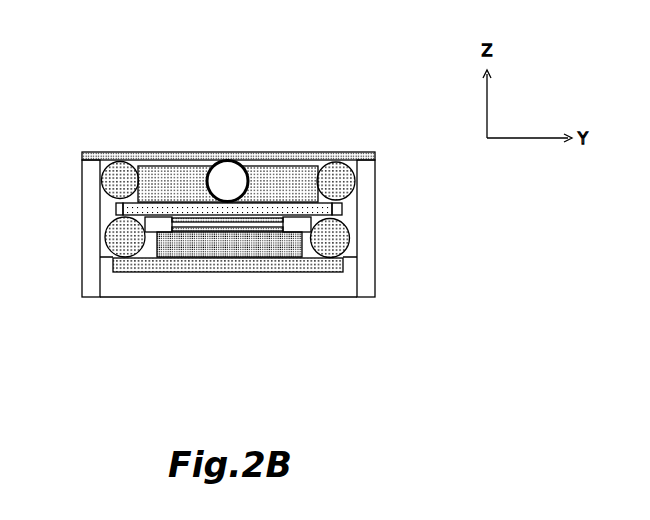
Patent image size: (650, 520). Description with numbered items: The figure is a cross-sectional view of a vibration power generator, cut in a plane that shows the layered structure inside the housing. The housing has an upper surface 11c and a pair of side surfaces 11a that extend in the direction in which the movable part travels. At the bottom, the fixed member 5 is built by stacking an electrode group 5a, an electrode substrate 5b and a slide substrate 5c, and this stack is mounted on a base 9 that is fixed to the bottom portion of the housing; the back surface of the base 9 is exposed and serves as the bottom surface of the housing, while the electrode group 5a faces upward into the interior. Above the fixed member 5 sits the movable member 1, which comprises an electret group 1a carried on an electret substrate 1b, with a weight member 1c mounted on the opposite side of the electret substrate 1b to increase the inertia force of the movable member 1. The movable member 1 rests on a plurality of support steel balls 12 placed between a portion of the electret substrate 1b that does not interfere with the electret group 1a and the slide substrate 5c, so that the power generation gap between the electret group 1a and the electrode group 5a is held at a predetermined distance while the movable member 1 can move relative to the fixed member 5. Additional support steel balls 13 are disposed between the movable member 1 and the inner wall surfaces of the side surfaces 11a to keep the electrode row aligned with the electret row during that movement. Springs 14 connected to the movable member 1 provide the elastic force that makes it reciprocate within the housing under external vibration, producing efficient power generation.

The movable member 1 is at (229, 145).
The electret group 1a is at (190, 218).
The electret substrate 1b is at (170, 212).
The weight member 1c is at (155, 172).
The fixed member 5 is at (228, 307).
The electrode group 5a is at (250, 231).
The electrode substrate 5b is at (213, 247).
The slide substrate 5c is at (262, 352).
The base 9 is at (312, 292).
The side surfaces 11a is at (90, 282).
The upper surface 11c is at (355, 158).
The support steel balls 12 is at (113, 230).
The additional support steel balls 13 is at (112, 178).
The springs 14 is at (232, 173).